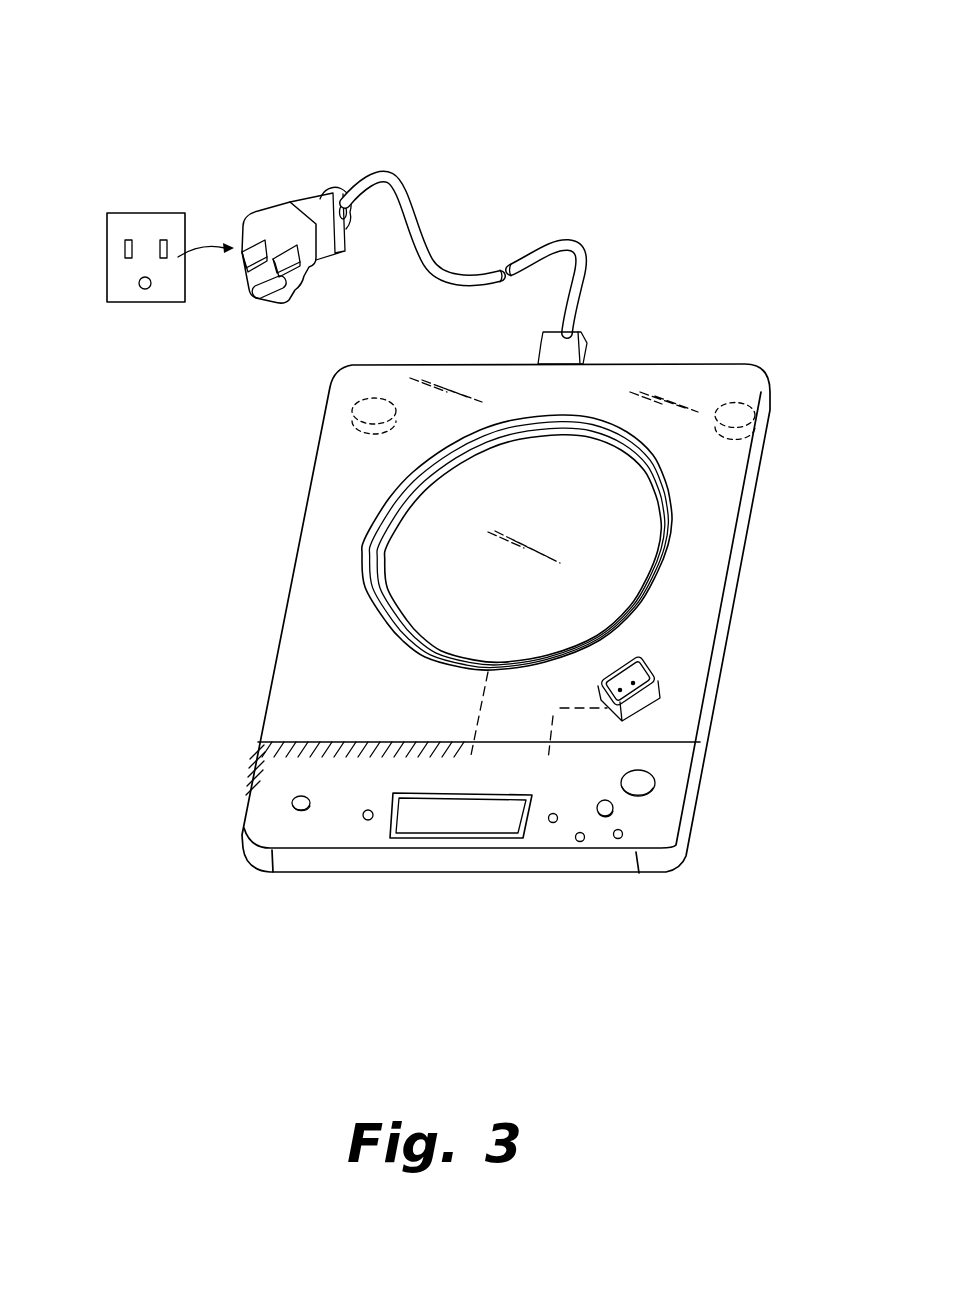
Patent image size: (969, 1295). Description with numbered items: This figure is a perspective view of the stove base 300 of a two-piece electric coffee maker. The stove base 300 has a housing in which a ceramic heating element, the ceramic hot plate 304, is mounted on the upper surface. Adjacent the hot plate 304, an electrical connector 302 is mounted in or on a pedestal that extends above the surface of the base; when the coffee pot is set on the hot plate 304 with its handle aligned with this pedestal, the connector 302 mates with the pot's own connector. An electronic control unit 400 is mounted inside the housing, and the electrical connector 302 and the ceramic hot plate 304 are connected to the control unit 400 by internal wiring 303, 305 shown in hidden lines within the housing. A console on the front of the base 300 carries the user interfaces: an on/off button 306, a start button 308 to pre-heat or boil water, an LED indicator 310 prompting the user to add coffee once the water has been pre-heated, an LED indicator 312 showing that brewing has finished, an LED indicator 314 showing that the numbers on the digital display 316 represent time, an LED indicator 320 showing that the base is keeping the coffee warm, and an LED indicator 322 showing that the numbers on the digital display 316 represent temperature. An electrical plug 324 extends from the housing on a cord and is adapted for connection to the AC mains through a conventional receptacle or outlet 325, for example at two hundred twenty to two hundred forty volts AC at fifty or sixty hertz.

The stove base 300 is at (228, 55).
The electrical connector 302 is at (646, 667).
The internal wiring 303 is at (560, 708).
The ceramic hot plate 304 is at (375, 506).
The internal wiring 305 is at (484, 704).
The on/off button 306 is at (655, 778).
The start button 308 is at (614, 806).
The LED indicator 310 is at (622, 838).
The LED indicator 312 is at (580, 842).
The LED indicator 314 is at (552, 823).
The digital display 316 is at (427, 838).
The LED indicator 320 is at (292, 801).
The LED indicator 322 is at (366, 809).
The electrical plug 324 is at (334, 194).
The outlet 325 is at (158, 213).
The electronic control unit 400 is at (565, 768).